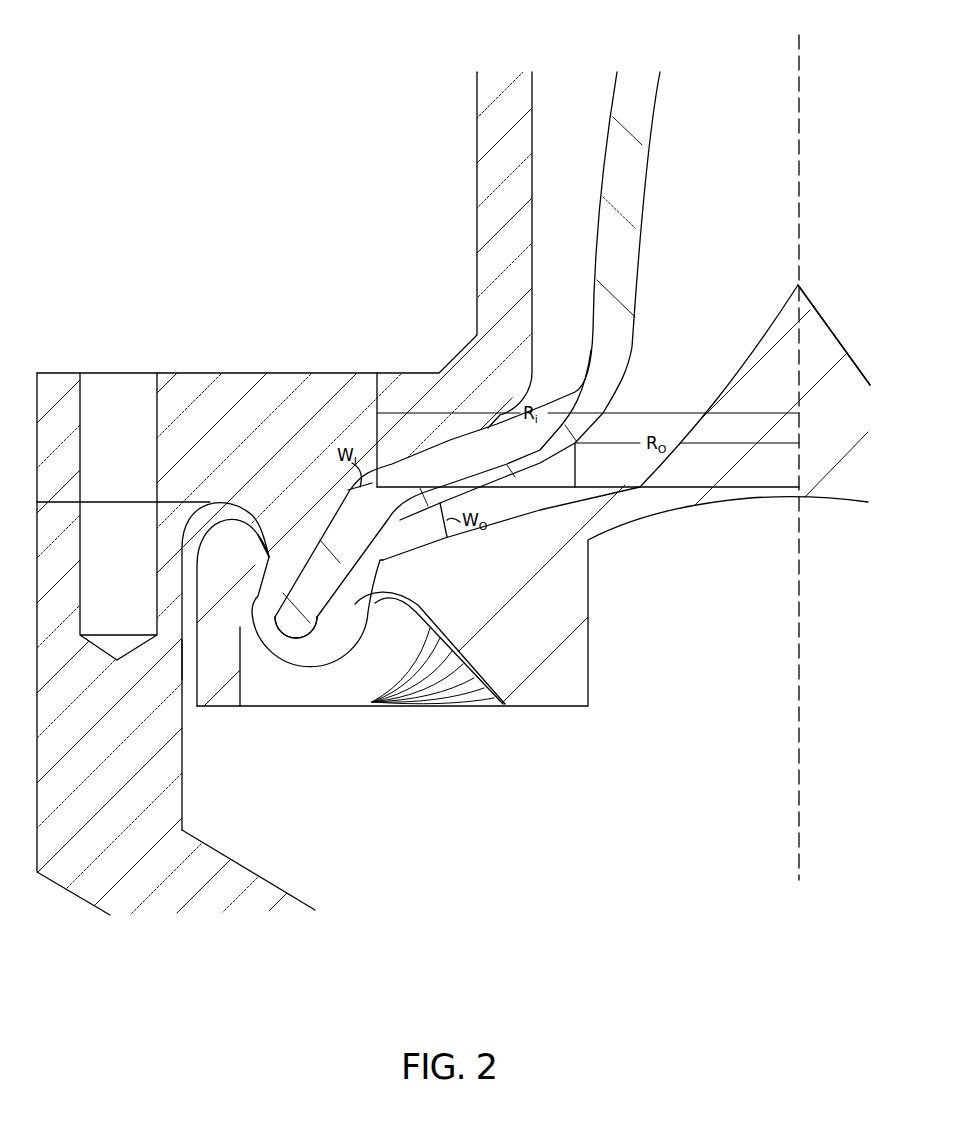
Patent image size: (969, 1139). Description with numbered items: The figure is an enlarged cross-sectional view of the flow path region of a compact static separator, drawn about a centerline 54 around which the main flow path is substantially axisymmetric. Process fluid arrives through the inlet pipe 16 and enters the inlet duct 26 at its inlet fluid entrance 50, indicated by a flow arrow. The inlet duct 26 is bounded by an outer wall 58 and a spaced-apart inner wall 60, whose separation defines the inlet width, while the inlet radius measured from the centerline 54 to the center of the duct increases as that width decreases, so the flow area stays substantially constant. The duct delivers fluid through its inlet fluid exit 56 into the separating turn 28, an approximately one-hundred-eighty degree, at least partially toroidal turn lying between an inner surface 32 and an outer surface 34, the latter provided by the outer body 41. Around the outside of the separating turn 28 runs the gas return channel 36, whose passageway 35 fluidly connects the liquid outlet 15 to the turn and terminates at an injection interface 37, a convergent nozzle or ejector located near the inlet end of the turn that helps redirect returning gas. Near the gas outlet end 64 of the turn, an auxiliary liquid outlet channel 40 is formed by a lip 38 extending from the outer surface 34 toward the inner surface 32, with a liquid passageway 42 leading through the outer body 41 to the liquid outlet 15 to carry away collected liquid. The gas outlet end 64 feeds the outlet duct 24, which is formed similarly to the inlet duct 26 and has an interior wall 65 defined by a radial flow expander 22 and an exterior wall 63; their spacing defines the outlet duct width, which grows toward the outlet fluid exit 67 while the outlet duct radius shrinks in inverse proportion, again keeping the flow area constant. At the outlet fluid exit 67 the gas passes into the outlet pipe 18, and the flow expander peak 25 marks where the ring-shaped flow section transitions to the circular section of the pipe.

The liquid outlet 15 is at (450, 784).
The inlet conduit 16 is at (566, 178).
The outlet conduit 18 is at (720, 208).
The radial flow expander 22 is at (818, 378).
The outlet duct 24 is at (400, 542).
The flow expander peak 25 is at (803, 298).
The inlet duct 26 is at (437, 458).
The separating turn 28 is at (260, 633).
The inner surface 32 is at (296, 619).
The outer surface 34 is at (297, 672).
The passageway 35 is at (183, 656).
The gas return channel 36 is at (213, 512).
The injection interface 37 is at (269, 556).
The lip 38 is at (357, 608).
The auxiliary liquid outlet channel 40 is at (412, 588).
The outer body 41 is at (373, 700).
The liquid passageway 42 is at (435, 623).
The inlet fluid entrance 50 is at (560, 298).
The centerline 54 is at (800, 62).
The inlet fluid exit 56 is at (320, 510).
The outer wall 58 is at (388, 464).
The inner wall 60 is at (462, 474).
The exterior wall 63 is at (632, 373).
The gas outlet end 64 is at (382, 562).
The interior wall 65 is at (560, 506).
The outlet fluid exit 67 is at (700, 293).